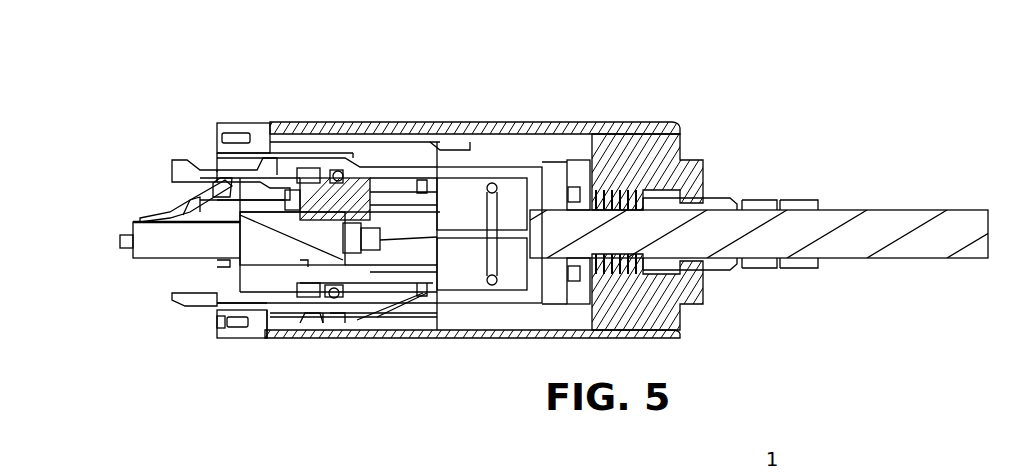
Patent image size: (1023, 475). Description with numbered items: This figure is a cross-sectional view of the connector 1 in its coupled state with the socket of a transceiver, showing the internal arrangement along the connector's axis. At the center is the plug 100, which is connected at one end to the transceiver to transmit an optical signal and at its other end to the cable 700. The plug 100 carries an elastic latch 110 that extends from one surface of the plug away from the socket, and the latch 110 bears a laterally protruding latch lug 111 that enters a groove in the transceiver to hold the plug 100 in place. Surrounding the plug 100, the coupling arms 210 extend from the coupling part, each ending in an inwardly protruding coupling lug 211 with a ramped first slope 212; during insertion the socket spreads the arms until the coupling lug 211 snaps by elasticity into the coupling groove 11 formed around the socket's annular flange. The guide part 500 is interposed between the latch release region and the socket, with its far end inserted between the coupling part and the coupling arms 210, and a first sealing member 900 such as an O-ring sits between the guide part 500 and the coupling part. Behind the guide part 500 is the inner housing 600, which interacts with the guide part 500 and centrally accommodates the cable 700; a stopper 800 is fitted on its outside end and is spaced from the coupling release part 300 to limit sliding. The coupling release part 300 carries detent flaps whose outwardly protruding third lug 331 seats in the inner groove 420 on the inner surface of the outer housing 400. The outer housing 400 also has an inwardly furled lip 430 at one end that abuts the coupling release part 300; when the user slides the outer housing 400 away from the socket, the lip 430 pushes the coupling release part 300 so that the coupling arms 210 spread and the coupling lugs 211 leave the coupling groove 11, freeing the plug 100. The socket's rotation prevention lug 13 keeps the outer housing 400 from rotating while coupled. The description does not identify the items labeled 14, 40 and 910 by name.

The connector 1 is at (697, 92).
The coupling groove 11 is at (231, 123).
The rotation prevention lug 13 is at (238, 333).
The cover portion 14 is at (262, 124).
The latch arm 40 is at (254, 193).
The plug 100 is at (135, 256).
The latch 110 is at (152, 213).
The latch lug 111 is at (220, 179).
The coupling arm 210 is at (331, 127).
The coupling lug 211 is at (323, 317).
The first slope 212 is at (305, 317).
The coupling release part 300 is at (361, 128).
The third lug 331 is at (428, 127).
The outer housing 400 is at (463, 339).
The inner groove 420 is at (401, 128).
The lip 430 is at (266, 338).
The guide part 500 is at (171, 160).
The inner housing 600 is at (460, 170).
The cable 700 is at (918, 213).
The stopper 800 is at (581, 165).
The first sealing member 900 is at (337, 300).
The fastener 910 is at (219, 323).